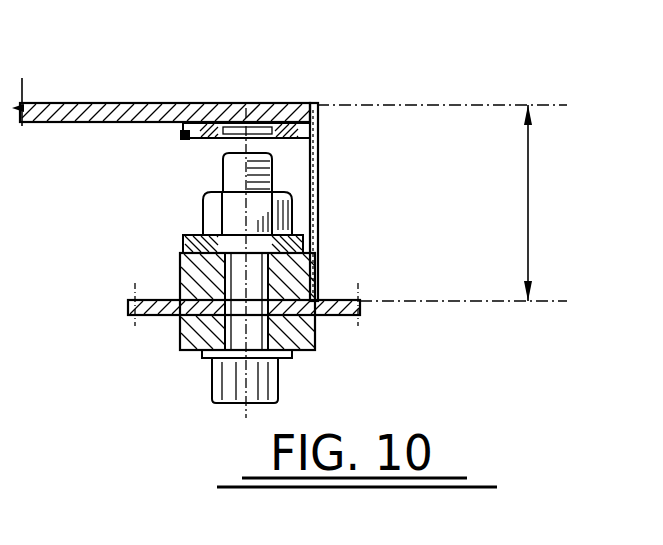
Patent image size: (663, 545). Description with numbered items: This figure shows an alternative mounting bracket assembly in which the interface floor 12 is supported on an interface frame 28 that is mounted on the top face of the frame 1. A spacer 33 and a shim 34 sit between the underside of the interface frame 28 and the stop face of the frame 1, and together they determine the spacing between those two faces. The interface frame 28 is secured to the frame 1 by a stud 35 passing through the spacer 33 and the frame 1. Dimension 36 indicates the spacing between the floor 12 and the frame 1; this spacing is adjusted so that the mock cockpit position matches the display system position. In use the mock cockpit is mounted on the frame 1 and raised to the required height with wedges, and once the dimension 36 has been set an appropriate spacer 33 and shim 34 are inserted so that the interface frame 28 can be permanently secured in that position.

The frame 1 is at (168, 324).
The interface floor 12 is at (146, 105).
The interface frame 28 is at (318, 160).
The spacer 33 is at (188, 280).
The shim 34 is at (183, 248).
The stud 35 is at (287, 358).
The dimension 36 is at (442, 203).